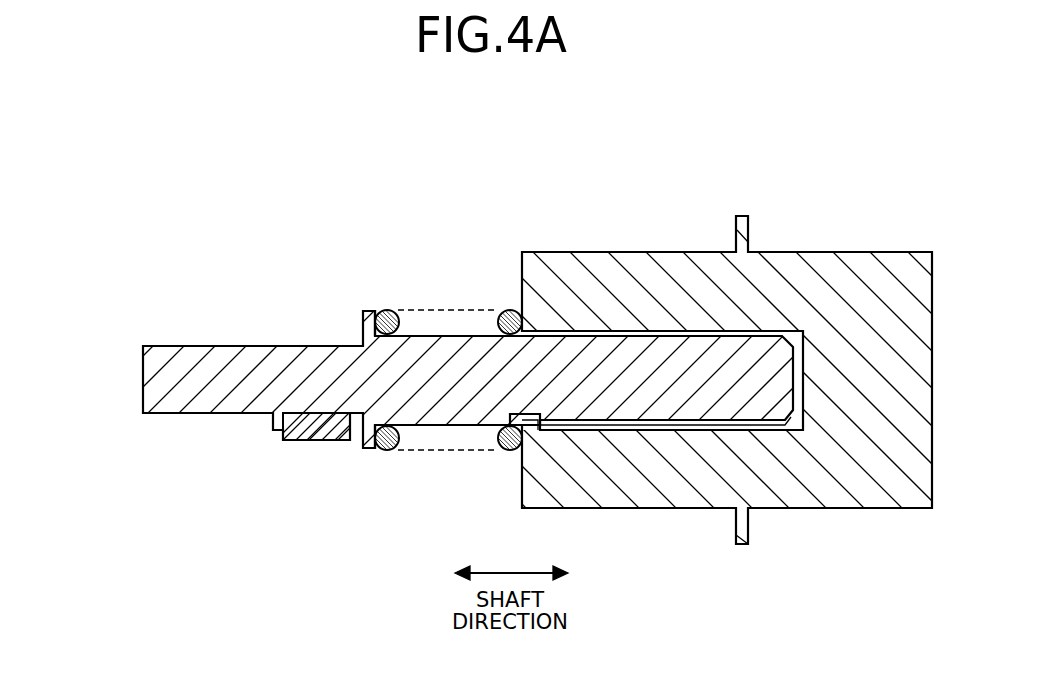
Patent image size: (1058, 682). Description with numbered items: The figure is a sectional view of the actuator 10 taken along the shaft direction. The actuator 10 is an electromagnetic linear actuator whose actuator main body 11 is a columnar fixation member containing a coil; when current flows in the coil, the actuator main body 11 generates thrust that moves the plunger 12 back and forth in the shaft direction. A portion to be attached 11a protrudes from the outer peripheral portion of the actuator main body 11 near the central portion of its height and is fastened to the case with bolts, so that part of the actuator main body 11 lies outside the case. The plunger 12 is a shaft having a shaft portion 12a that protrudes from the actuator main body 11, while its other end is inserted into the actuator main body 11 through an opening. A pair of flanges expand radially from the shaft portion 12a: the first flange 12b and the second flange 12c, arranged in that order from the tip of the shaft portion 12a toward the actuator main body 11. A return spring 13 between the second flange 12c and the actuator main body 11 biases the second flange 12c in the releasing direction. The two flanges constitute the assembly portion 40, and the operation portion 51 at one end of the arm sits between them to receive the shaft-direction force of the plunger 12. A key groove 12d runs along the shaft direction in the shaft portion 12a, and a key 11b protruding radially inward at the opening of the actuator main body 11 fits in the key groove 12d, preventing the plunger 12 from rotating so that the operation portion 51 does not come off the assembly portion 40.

The actuator 10 is at (619, 351).
The actuator main body 11 is at (708, 252).
The portion to be attached 11a is at (741, 215).
The key 11b is at (530, 413).
The plunger 12 is at (143, 376).
The shaft portion 12a is at (202, 346).
The first flange 12b is at (271, 429).
The second flange 12c is at (366, 450).
The key groove 12d is at (655, 423).
The return spring 13 is at (388, 311).
The assembly portion 40 is at (322, 479).
The operation portion 51 is at (290, 441).